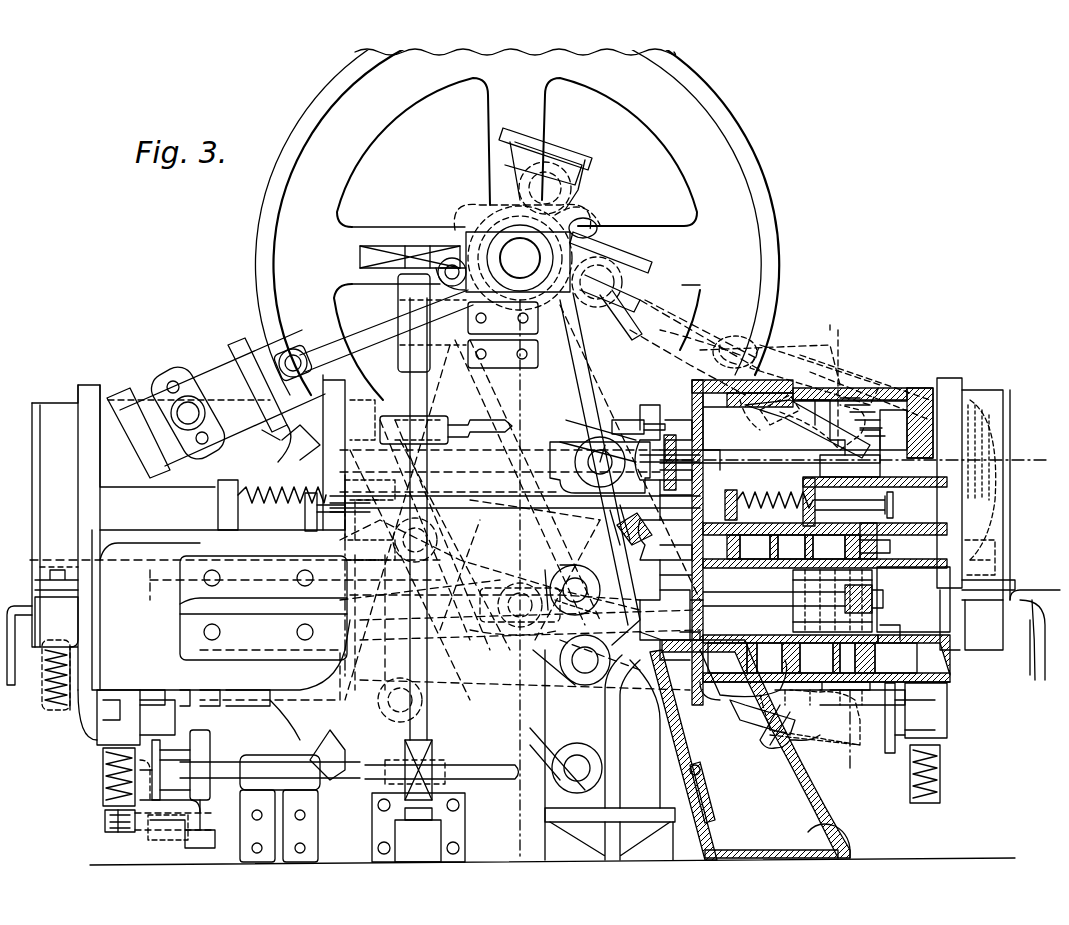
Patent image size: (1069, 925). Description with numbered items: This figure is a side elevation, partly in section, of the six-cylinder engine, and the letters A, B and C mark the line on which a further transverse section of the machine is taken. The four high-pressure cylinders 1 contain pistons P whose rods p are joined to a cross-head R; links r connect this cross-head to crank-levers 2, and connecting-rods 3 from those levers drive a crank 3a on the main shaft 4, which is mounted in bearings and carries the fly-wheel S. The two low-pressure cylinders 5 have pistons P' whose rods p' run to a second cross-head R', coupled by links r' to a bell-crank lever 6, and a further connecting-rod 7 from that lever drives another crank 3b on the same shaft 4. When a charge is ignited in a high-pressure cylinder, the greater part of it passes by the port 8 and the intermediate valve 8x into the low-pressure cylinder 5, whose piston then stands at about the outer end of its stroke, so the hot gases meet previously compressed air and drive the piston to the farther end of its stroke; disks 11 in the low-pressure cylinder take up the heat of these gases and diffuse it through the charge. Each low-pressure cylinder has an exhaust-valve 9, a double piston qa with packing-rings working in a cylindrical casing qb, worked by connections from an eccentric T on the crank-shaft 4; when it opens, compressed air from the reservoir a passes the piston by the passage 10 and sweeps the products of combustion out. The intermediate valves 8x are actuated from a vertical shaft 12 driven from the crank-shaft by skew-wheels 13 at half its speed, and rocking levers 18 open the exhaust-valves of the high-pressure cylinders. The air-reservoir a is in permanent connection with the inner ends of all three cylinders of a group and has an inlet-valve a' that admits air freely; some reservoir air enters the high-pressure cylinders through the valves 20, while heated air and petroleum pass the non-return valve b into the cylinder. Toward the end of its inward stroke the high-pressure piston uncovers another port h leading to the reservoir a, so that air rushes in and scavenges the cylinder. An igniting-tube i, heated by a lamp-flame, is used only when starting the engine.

The high-pressure cylinders 1 is at (478, 562).
The crank-levers 2 is at (478, 722).
The connecting-rods 3 is at (600, 447).
The crank 3a is at (640, 265).
The crank 3b is at (595, 228).
The main shaft 4 is at (522, 257).
The low-pressure cylinders 5 is at (285, 440).
The bell-crank lever 6 is at (593, 469).
The connecting-rod 7 is at (580, 185).
The port 8 is at (880, 545).
The intermediate valve 8x is at (893, 503).
The exhaust-valve 9 is at (208, 370).
The passage 10 is at (722, 390).
The disks 11 is at (985, 465).
The vertical shaft 12 is at (418, 580).
The skew-wheels 13 is at (380, 246).
The rocking levers 18 is at (112, 830).
The valves 20 is at (988, 728).
The fly-wheel S is at (524, 201).
The eccentric T is at (490, 225).
The cross-head R is at (540, 582).
The cross-head R' is at (594, 441).
The links r is at (577, 581).
The links r' is at (638, 417).
The section line letter C is at (830, 317).
The double piston qa is at (865, 388).
The cylindrical casing qb is at (815, 358).
The pistons P' is at (962, 408).
The piston rods p' is at (770, 446).
The piston rods p is at (826, 579).
The pistons P is at (890, 621).
The section line letter B is at (850, 453).
The non-return valve b is at (1037, 635).
The igniting-tube i is at (1038, 650).
The air-reservoir a is at (787, 746).
The inlet-valve a' is at (709, 792).
The port h is at (790, 726).
The section line letter A is at (849, 746).